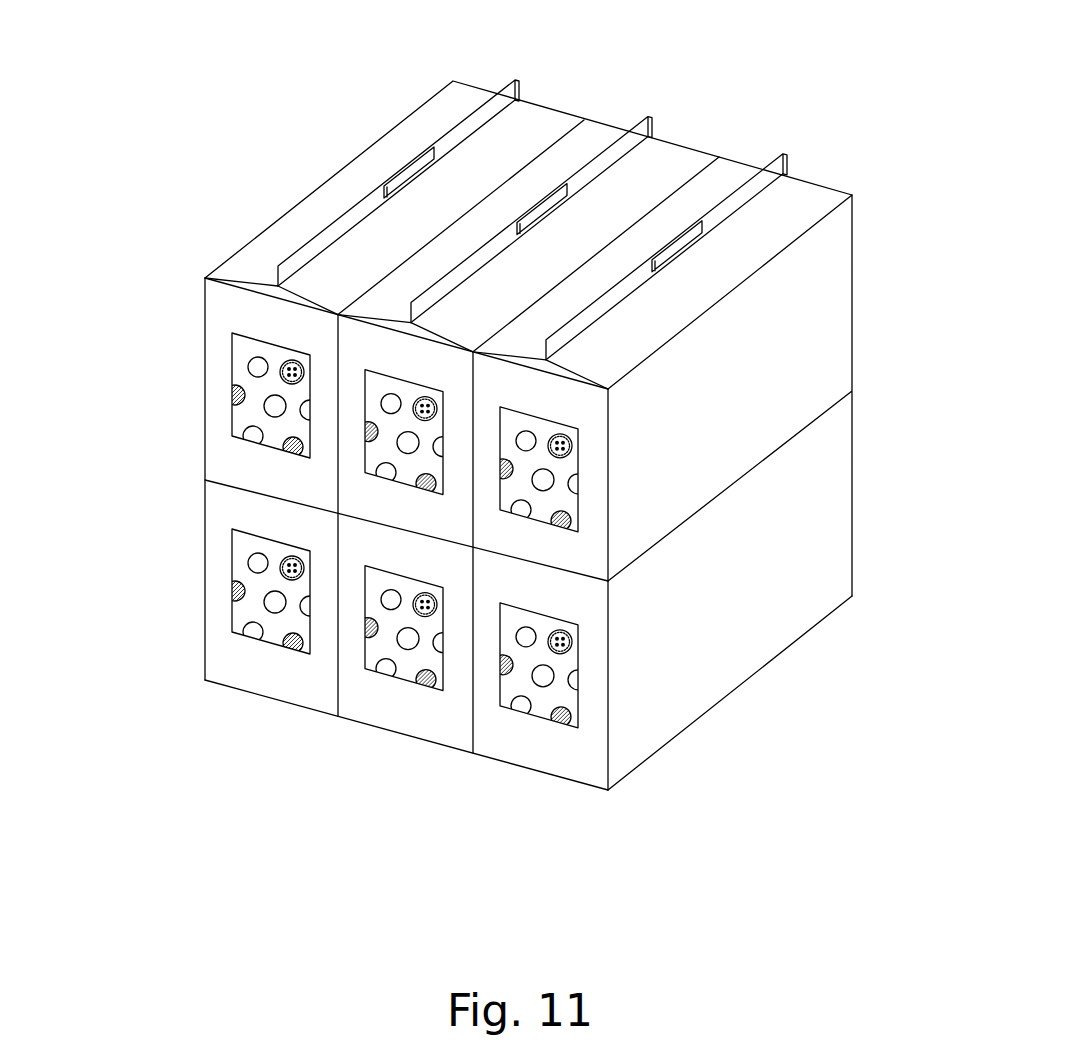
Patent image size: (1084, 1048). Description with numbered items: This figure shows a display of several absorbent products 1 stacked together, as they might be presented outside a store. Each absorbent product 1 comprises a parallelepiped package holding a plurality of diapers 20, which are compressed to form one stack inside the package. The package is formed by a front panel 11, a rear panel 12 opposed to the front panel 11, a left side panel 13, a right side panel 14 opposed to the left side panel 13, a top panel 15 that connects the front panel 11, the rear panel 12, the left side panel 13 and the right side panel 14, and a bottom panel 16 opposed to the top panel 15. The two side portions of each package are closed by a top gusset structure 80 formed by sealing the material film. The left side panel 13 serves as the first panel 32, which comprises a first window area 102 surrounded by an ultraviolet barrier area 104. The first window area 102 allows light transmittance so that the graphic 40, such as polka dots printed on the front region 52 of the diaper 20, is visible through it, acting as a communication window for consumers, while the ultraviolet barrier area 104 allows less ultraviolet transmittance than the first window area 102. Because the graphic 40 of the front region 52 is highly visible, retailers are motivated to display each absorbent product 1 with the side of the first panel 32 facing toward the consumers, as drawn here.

The absorbent product 1 is at (598, 137).
The front panel 11 is at (833, 521).
The rear panel 12 is at (217, 406).
The left side panel 13 is at (248, 297).
The right side panel 14 is at (472, 97).
The top panel 15 is at (533, 117).
The bottom panel 16 is at (655, 738).
The diaper 20 is at (277, 435).
The first panel 32 is at (222, 357).
The graphic 40 is at (266, 362).
The front region 52 is at (241, 349).
The top gusset structure 80 is at (284, 289).
The first window area 102 is at (233, 428).
The ultraviolet barrier area 104 is at (224, 299).